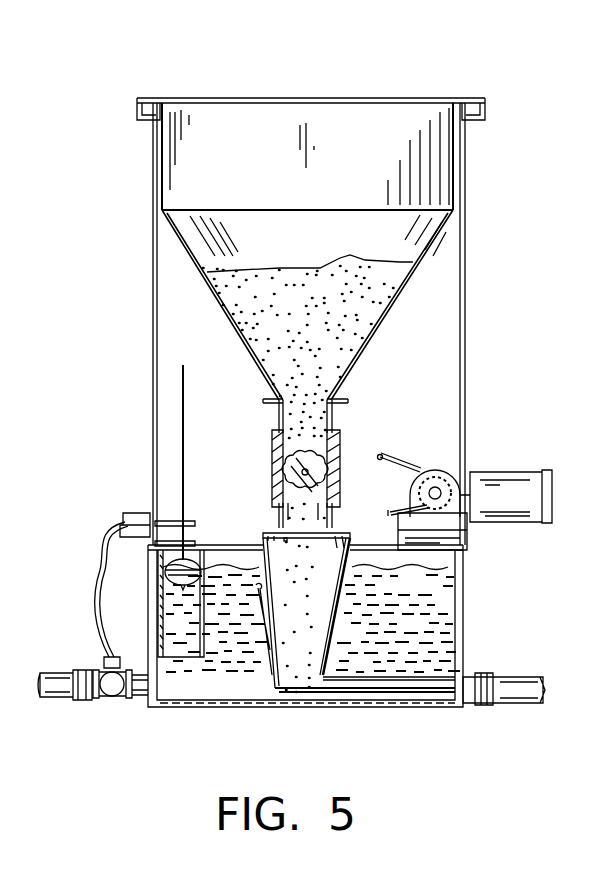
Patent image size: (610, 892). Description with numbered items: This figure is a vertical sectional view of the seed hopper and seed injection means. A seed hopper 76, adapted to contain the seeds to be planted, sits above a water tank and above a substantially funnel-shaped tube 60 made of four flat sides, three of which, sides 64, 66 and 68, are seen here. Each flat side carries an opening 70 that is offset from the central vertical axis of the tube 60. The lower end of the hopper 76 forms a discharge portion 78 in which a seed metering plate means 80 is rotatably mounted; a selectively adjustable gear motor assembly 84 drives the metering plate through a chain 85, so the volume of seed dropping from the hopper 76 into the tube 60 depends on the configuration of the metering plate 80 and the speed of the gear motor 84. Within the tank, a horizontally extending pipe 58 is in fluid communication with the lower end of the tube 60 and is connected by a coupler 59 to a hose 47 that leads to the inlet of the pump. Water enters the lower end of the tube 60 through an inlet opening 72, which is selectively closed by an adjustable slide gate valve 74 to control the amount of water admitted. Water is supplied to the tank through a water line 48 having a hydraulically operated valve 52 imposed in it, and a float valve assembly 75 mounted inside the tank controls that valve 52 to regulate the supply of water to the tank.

The hose 47 is at (522, 685).
The water line 48 is at (64, 690).
The hydraulically operated valve 52 is at (118, 687).
The horizontally extending pipe 58 is at (400, 676).
The coupler 59 is at (490, 700).
The tube 60 is at (352, 612).
The flat side 64 is at (347, 570).
The flat side 66 is at (327, 545).
The flat side 68 is at (258, 540).
The opening 70 is at (294, 544).
The inlet opening 72 is at (282, 677).
The adjustable slide gate valve 74 is at (265, 648).
The float valve assembly 75 is at (208, 570).
The seed hopper 76 is at (413, 287).
The discharge portion 78 is at (313, 424).
The seed metering plate means 80 is at (320, 465).
The gear motor assembly 84 is at (512, 483).
The chain 85 is at (420, 470).